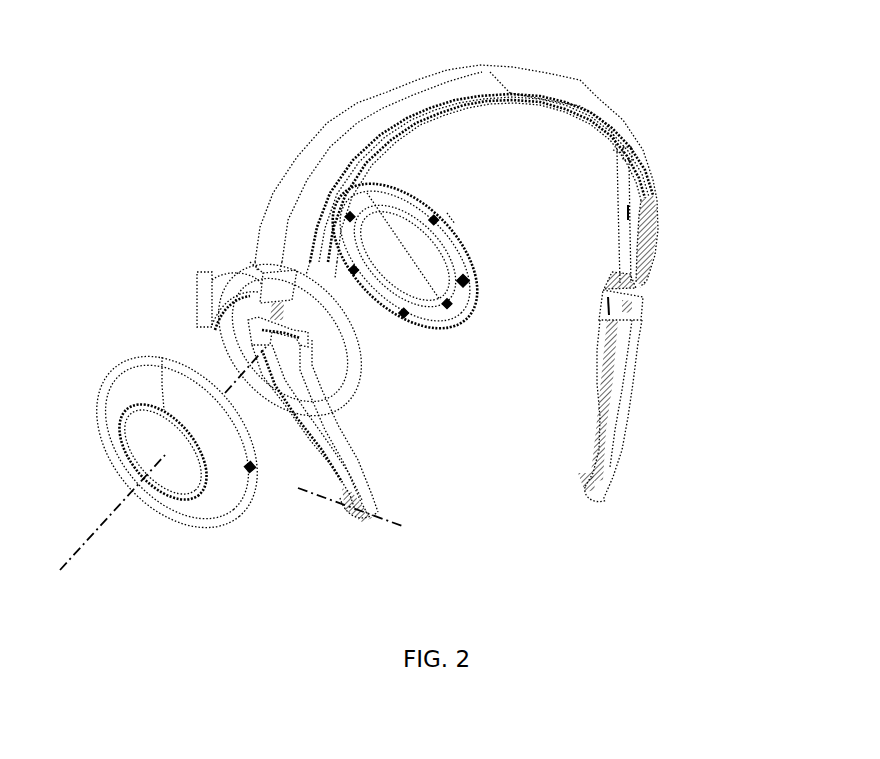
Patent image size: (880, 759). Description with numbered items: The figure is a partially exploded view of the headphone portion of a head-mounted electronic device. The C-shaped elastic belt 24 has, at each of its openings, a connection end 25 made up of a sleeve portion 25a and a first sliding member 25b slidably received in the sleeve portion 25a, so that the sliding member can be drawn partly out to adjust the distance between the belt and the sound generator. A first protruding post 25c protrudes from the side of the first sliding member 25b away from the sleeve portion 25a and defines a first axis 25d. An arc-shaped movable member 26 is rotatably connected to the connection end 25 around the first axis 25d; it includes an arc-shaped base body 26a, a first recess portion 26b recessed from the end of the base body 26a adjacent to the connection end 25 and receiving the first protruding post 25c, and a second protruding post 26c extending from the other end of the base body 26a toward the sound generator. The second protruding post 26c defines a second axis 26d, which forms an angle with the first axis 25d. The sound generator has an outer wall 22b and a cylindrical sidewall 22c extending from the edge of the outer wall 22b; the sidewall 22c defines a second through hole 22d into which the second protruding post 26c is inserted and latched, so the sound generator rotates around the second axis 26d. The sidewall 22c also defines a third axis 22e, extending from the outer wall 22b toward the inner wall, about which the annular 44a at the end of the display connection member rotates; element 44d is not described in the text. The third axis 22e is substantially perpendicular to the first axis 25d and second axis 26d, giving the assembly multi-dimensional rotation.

The elastic belt 24 is at (540, 58).
The annular 44a is at (252, 262).
The pad on ear cup ring 44d is at (463, 280).
The connection end 25 is at (662, 324).
The sleeve portion 25a is at (637, 207).
The first sliding member 25b is at (630, 260).
The first protruding post 25c is at (620, 288).
The first axis 25d is at (627, 232).
The movable member 26 is at (364, 459).
The base body 26a is at (318, 437).
The first recess portion 26b is at (280, 330).
The second protruding post 26c is at (340, 503).
The second axis 26d is at (407, 530).
The outer wall 22b is at (115, 402).
The sidewall 22c is at (162, 363).
The second through hole 22d is at (253, 470).
The third axis 22e is at (115, 510).